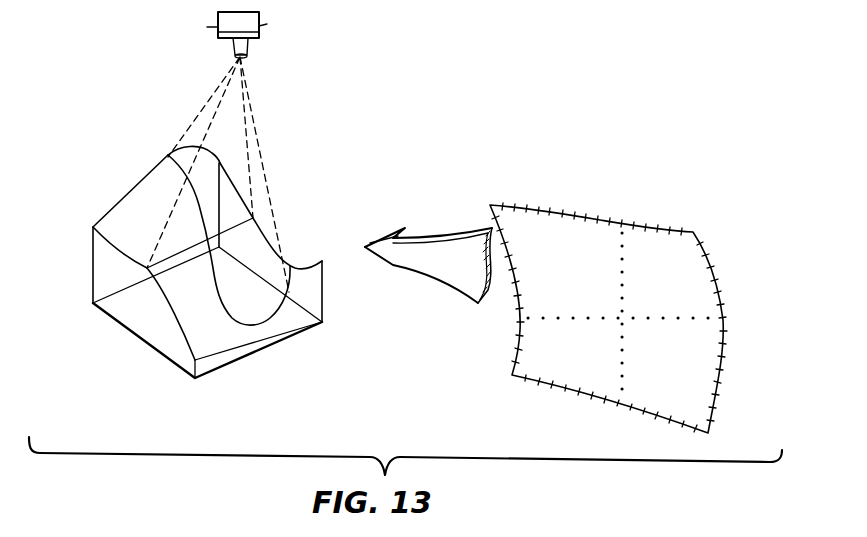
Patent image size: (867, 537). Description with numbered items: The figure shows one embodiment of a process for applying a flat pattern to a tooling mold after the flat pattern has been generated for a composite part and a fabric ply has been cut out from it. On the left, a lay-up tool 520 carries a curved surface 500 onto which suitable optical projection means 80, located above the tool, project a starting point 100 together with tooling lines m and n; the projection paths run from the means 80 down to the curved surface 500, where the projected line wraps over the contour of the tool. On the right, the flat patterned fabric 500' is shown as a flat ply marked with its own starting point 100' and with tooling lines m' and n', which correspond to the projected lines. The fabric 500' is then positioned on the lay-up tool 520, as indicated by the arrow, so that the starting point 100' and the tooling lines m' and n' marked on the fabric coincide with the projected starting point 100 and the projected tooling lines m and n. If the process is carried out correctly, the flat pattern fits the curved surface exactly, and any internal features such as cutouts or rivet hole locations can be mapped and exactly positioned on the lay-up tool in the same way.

The optical projection means 80 is at (250, 45).
The starting point 100 is at (218, 191).
The curved surface 500 is at (196, 253).
The lay-up tool 520 is at (265, 337).
The tooling line m is at (167, 176).
The tooling line n is at (248, 234).
The flat patterned fabric 500' is at (632, 318).
The starting point marked on the fabric 100' is at (618, 311).
The tooling line marked on the fabric m' is at (602, 245).
The tooling line marked on the fabric n' is at (696, 334).